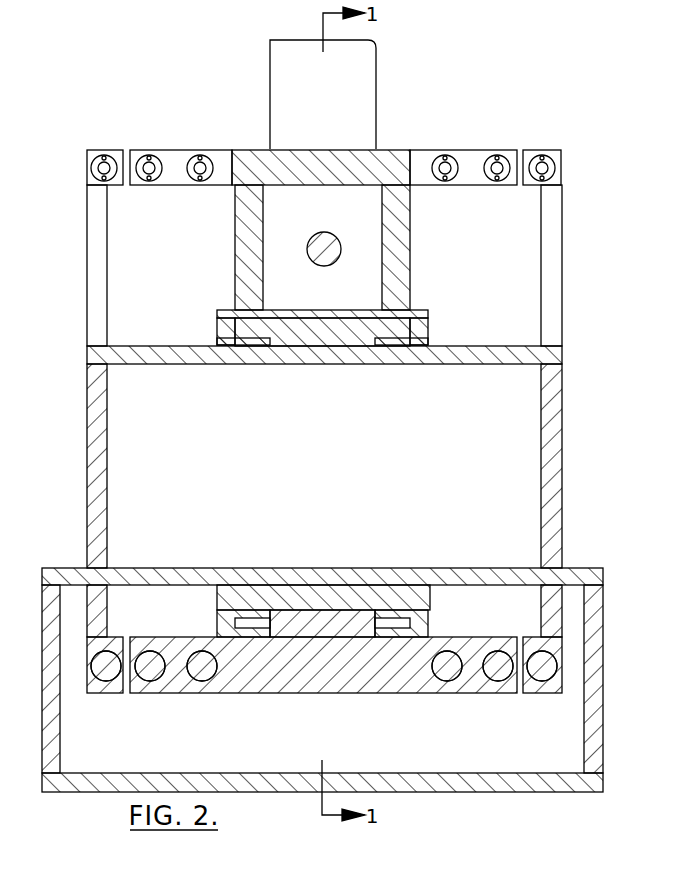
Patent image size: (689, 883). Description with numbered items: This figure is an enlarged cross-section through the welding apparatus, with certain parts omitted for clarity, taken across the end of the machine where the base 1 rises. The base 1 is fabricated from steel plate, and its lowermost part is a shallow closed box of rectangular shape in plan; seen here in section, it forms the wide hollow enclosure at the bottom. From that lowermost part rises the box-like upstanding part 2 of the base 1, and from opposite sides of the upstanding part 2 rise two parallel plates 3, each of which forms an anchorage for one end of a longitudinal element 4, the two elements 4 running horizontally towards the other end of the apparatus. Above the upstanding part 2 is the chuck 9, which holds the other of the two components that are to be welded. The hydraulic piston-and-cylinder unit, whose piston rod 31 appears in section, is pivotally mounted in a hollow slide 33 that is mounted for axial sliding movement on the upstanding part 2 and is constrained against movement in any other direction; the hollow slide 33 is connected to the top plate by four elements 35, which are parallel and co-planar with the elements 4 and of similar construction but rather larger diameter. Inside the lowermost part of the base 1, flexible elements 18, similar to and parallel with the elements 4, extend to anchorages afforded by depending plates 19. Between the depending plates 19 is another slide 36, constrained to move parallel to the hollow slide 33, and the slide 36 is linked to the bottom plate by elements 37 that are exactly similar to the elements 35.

The base 1 is at (180, 567).
The upstanding part 2 is at (100, 487).
The parallel plates 3 is at (324, 265).
The longitudinal element 4 is at (104, 165).
The chuck 9 is at (363, 118).
The flexible elements 18 is at (105, 672).
The depending plates 19 is at (94, 608).
The piston rod 31 is at (334, 238).
The hollow slide 33 is at (258, 283).
The elements 35 is at (150, 166).
The slide 36 is at (270, 678).
The elements 37 is at (150, 672).